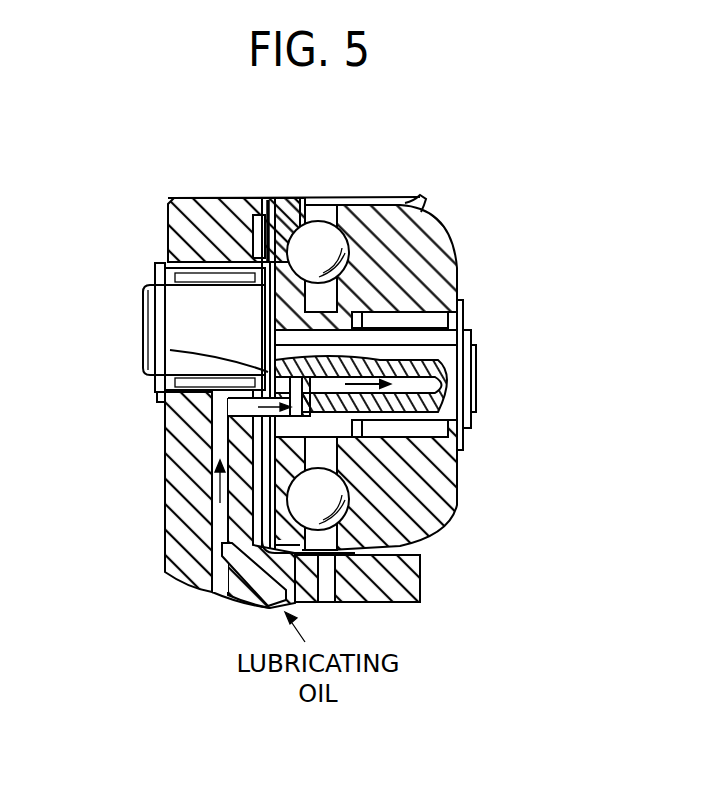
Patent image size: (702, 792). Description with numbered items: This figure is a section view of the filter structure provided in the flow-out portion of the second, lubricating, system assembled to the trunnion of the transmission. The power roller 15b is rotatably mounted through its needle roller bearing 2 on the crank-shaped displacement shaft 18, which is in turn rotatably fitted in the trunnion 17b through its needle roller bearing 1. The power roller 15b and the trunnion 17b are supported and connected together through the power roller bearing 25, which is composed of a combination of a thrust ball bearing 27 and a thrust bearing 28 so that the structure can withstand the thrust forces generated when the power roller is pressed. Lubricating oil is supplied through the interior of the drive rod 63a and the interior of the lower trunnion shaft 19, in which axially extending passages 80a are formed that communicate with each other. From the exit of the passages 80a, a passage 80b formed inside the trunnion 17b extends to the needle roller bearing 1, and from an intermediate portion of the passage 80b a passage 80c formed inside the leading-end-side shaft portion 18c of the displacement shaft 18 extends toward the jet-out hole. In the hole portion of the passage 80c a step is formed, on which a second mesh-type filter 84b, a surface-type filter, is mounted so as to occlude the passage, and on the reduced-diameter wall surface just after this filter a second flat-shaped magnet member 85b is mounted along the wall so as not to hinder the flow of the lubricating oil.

The needle roller bearing 1 is at (190, 233).
The needle roller bearing 2 is at (430, 318).
The power roller bearing 25 is at (259, 186).
The thrust ball bearing 27 is at (283, 206).
The thrust bearing 28 is at (244, 200).
The displacement shaft 18 is at (190, 302).
The second mesh-type filter 84b is at (200, 355).
The passage 80b is at (212, 421).
The trunnion 17b is at (187, 485).
The passage 80c is at (455, 350).
The second flat-shaped magnet member 85b is at (452, 372).
The leading-end-side shaft portion 18c is at (455, 418).
The power roller 15b is at (435, 515).
The passage 80a is at (257, 582).
The trunnion shaft 19 is at (418, 590).
The drive rod 63a is at (353, 603).